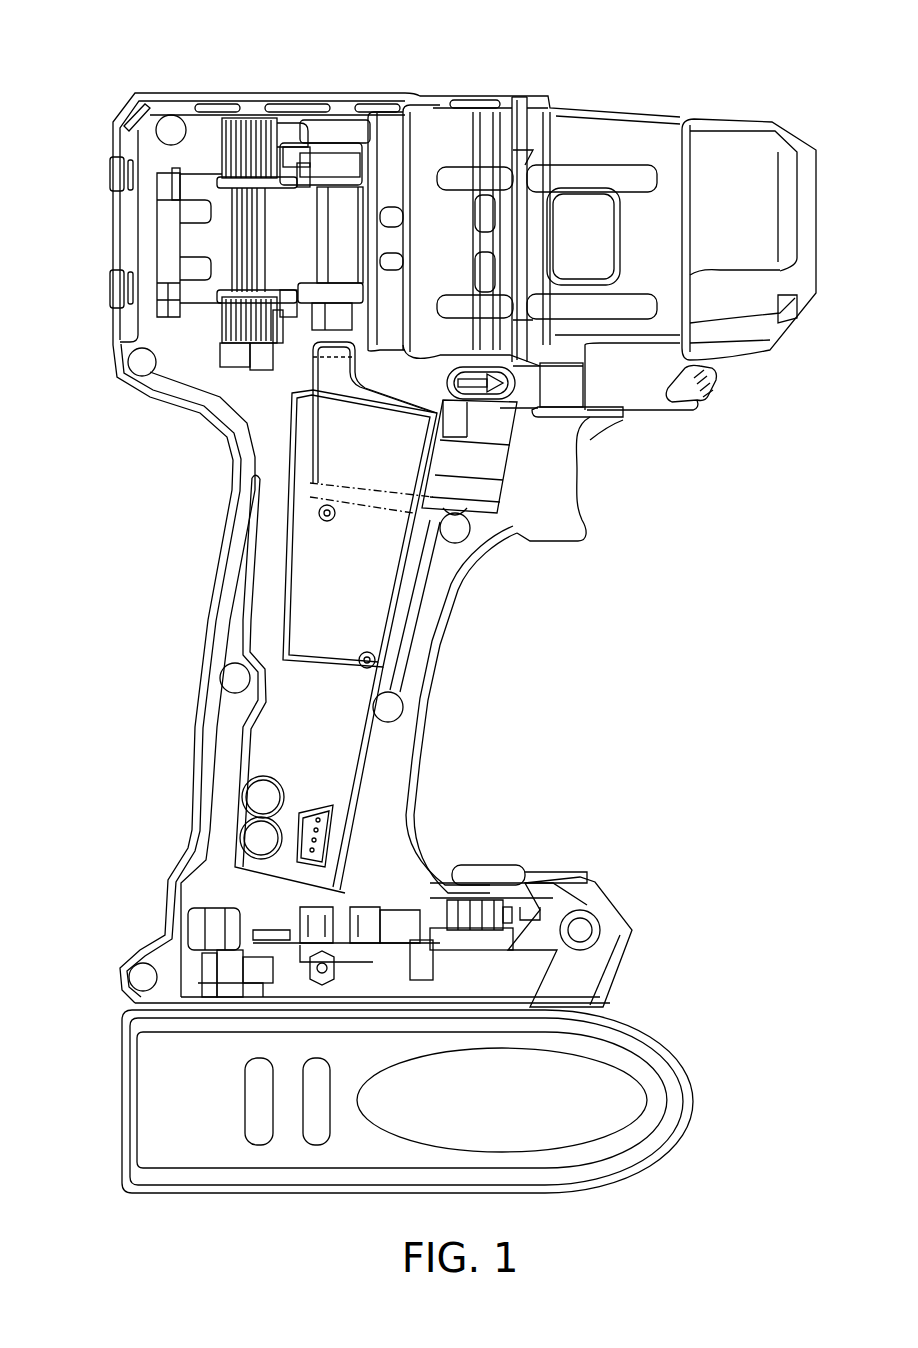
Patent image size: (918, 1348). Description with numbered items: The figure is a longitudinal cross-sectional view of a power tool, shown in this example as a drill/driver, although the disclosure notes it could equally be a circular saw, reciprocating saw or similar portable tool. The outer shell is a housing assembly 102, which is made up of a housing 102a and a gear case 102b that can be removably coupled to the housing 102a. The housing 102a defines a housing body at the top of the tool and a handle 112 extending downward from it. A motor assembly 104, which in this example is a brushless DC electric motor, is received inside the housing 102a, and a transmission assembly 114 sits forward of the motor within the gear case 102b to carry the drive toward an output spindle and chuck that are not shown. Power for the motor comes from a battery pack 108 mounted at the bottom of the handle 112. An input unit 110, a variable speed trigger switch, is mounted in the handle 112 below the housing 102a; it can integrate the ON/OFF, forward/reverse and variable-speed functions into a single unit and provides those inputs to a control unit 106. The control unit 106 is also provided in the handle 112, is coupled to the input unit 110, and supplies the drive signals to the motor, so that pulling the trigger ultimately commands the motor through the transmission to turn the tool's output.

The housing assembly 102 is at (404, 72).
The housing 102a is at (248, 112).
The gear case 102b is at (550, 113).
The motor assembly 104 is at (336, 128).
The control unit 106 is at (282, 565).
The battery pack 108 is at (120, 1105).
The input unit 110 is at (592, 530).
The handle 112 is at (197, 776).
The transmission assembly 114 is at (507, 118).